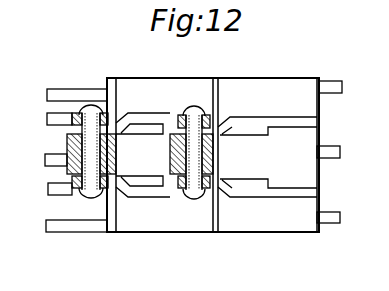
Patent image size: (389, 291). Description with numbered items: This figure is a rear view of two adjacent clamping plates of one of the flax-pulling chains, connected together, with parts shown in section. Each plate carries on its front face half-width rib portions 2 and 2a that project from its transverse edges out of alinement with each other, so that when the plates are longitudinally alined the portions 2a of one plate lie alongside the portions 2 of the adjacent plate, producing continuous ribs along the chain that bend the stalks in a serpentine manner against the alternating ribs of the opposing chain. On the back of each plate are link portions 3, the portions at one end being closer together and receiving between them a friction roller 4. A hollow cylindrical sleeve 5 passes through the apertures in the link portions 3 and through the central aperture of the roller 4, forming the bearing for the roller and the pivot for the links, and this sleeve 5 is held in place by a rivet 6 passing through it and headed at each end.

The rib portion 2 is at (335, 87).
The rib portion 2a is at (77, 95).
The link portion 3 is at (150, 120).
The friction roller 4 is at (67, 168).
The hollow cylindrical sleeve 5 is at (78, 191).
The rivet 6 is at (88, 197).